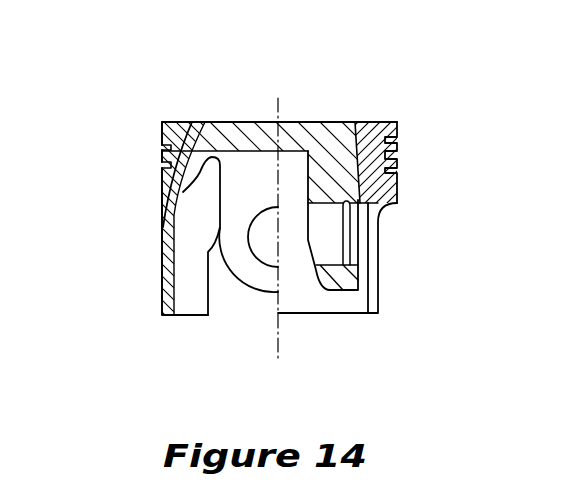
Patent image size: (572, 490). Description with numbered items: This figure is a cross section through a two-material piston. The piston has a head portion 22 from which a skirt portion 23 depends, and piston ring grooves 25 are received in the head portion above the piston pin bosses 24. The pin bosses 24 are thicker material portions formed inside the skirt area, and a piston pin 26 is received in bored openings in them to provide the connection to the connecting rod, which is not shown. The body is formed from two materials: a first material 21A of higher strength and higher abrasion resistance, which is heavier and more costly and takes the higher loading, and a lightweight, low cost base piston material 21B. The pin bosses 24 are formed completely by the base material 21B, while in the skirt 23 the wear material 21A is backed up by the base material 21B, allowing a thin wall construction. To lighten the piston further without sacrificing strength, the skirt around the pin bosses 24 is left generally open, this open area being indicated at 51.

The head portion 22 is at (312, 122).
The first material 21A is at (400, 133).
The base piston material 21B is at (347, 128).
The piston ring grooves 25 is at (160, 165).
The skirt portion 23 is at (160, 227).
The piston pin bosses 24 is at (229, 245).
The piston pin 26 is at (265, 245).
The open area 51 is at (378, 211).